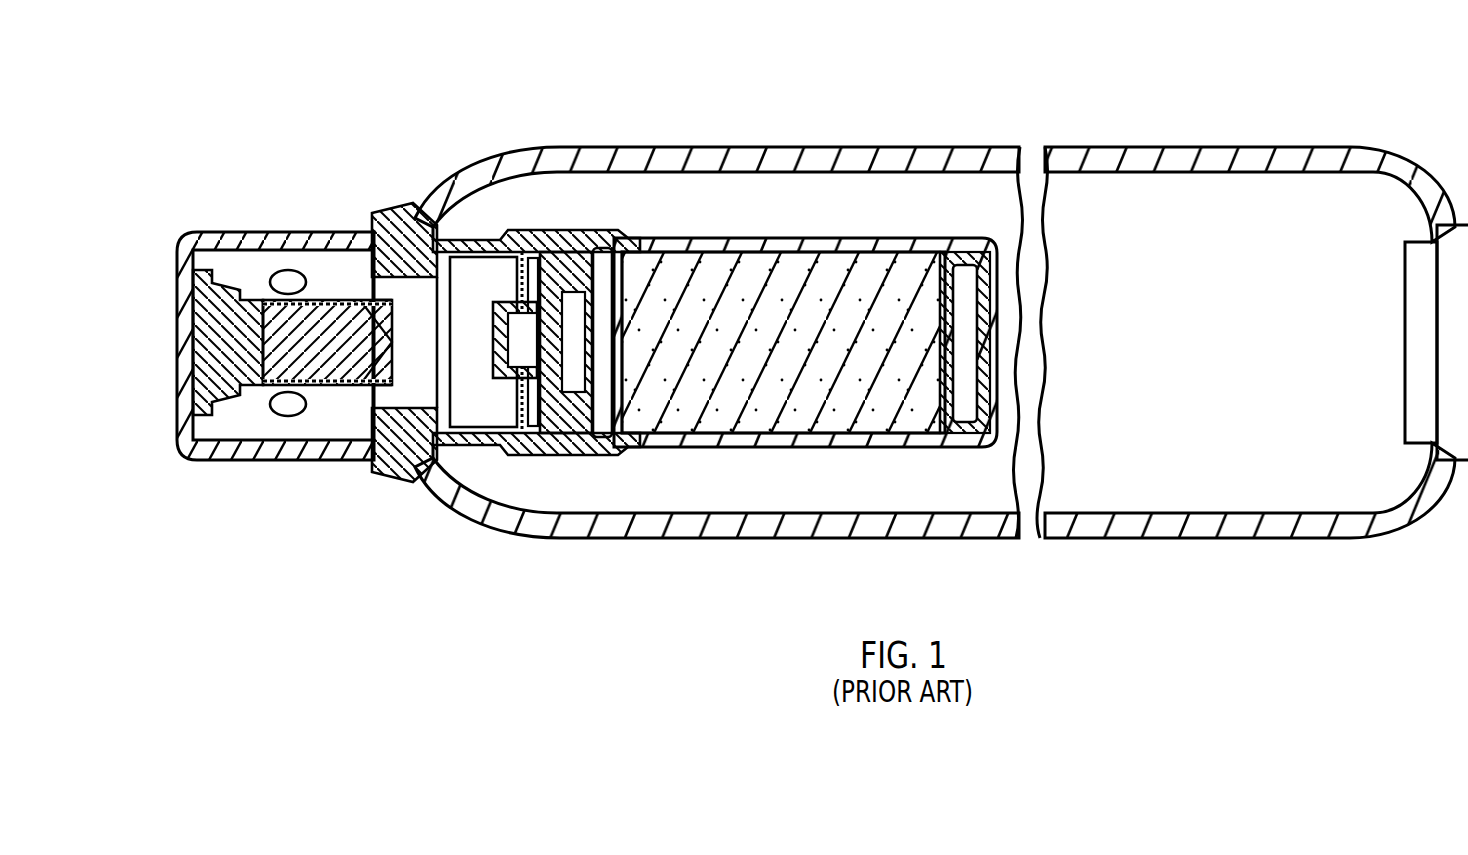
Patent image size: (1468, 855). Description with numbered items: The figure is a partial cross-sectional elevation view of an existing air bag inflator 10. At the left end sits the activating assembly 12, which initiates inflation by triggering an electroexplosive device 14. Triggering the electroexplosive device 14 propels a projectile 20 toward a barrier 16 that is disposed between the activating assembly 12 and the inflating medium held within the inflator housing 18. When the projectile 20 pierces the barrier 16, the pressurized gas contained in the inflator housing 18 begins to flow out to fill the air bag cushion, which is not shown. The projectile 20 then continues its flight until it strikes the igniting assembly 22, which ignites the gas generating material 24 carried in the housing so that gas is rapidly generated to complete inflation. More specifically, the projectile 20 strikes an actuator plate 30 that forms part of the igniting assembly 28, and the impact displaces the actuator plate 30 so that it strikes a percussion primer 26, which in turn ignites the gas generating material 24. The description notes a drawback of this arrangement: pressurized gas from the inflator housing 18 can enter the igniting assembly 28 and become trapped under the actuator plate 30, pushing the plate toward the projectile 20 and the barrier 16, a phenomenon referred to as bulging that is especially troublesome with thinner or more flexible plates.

The inflator 10 is at (206, 187).
The activating assembly 12 is at (236, 278).
The electroexplosive device 14 is at (215, 335).
The barrier 16 is at (443, 290).
The inflator housing 18 is at (852, 150).
The projectile 20 is at (337, 355).
The igniting assembly 22 is at (586, 227).
The gas generating material 24 is at (765, 373).
The percussion primer 26 is at (547, 390).
The igniting assembly 28 is at (723, 240).
The actuator plate 30 is at (505, 368).